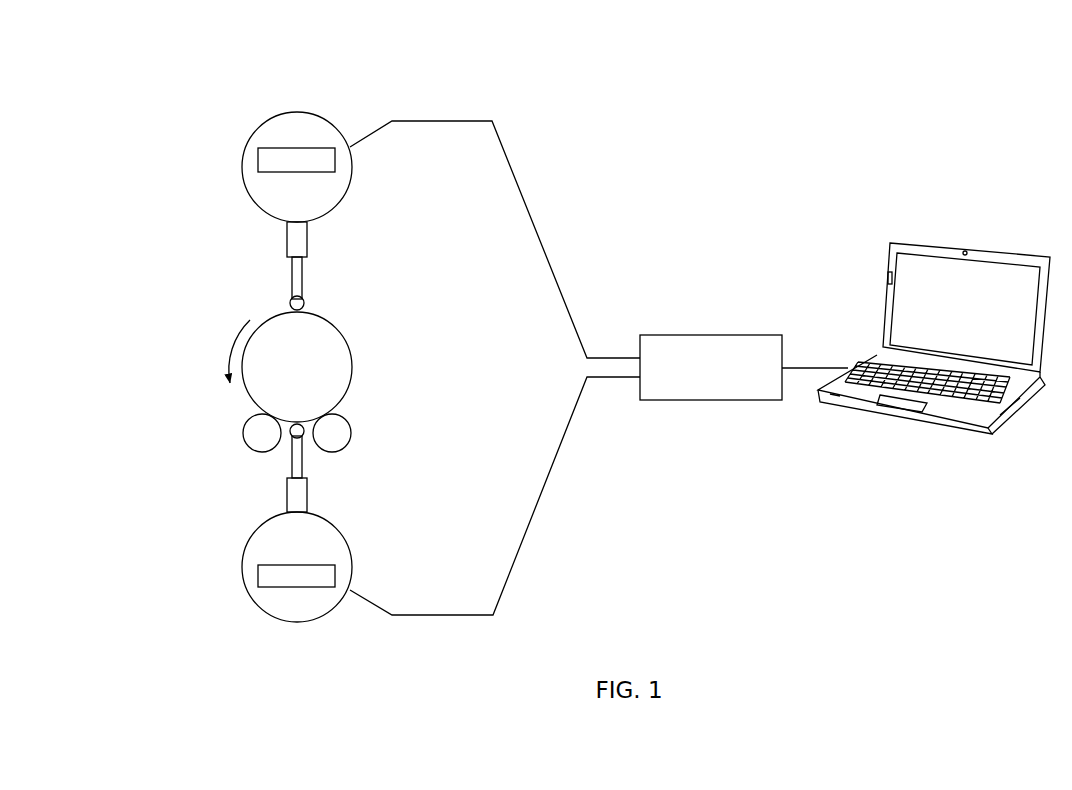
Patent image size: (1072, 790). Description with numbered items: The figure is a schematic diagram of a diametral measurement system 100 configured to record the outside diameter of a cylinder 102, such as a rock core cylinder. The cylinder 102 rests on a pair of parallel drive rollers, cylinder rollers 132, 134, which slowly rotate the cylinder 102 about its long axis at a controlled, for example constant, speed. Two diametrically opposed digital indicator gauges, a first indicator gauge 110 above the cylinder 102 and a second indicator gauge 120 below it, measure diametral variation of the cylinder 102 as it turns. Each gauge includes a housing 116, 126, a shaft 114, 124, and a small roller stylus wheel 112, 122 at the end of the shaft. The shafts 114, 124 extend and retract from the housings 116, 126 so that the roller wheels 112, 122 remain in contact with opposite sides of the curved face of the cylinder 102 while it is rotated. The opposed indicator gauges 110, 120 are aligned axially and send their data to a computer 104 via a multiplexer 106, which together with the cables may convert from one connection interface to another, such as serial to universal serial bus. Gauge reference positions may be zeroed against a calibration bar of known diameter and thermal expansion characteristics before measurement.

The diametral measurement system 100 is at (958, 90).
The cylinder 102 is at (350, 345).
The computer 104 is at (923, 243).
The multiplexer 106 is at (706, 333).
The first indicator gauge 110 is at (303, 108).
The roller stylus wheel 112 is at (290, 296).
The shaft 114 is at (299, 284).
The housing 116 is at (278, 130).
The second indicator gauge 120 is at (305, 623).
The roller stylus wheel 122 is at (289, 446).
The shaft 124 is at (300, 450).
The housing 126 is at (277, 540).
The cylinder roller 132 is at (244, 418).
The cylinder roller 134 is at (352, 418).